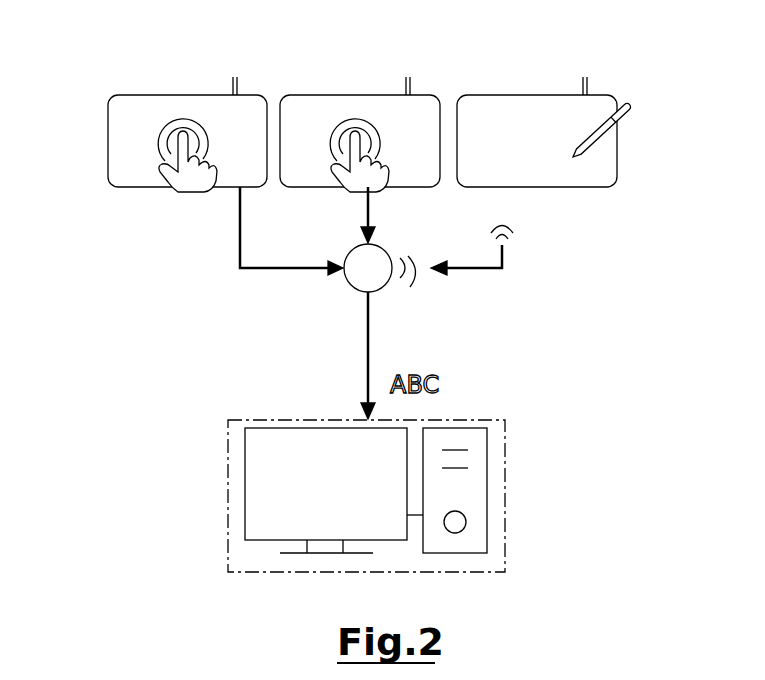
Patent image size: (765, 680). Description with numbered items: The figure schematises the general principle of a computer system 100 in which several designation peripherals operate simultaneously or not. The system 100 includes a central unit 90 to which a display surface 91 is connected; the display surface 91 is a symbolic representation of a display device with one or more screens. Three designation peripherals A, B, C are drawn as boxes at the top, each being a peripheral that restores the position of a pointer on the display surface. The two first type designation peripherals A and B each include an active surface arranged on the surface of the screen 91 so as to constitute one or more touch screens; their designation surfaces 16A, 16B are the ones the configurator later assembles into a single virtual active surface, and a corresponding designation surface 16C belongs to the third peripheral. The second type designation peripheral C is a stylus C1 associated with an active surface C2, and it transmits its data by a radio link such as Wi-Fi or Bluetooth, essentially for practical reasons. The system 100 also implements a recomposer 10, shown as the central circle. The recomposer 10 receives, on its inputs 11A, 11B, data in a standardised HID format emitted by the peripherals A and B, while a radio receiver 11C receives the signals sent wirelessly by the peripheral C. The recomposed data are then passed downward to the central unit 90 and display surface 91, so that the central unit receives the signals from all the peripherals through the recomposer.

The computer system 100 is at (100, 452).
The recomposer 10 is at (384, 280).
The input of the recomposer 11A is at (340, 277).
The input of the recomposer 11B is at (363, 238).
The radio receiver 11C is at (405, 280).
The designation surface 16A is at (138, 110).
The designation surface 16B is at (316, 110).
The terminal device C touch panel 16C is at (472, 110).
The designation peripheral A is at (162, 137).
The designation peripheral B is at (376, 141).
The designation peripheral C is at (590, 141).
The stylus C1 is at (620, 120).
The active surface C2 is at (602, 167).
The central unit 90 is at (357, 509).
The display surface 91 is at (272, 488).